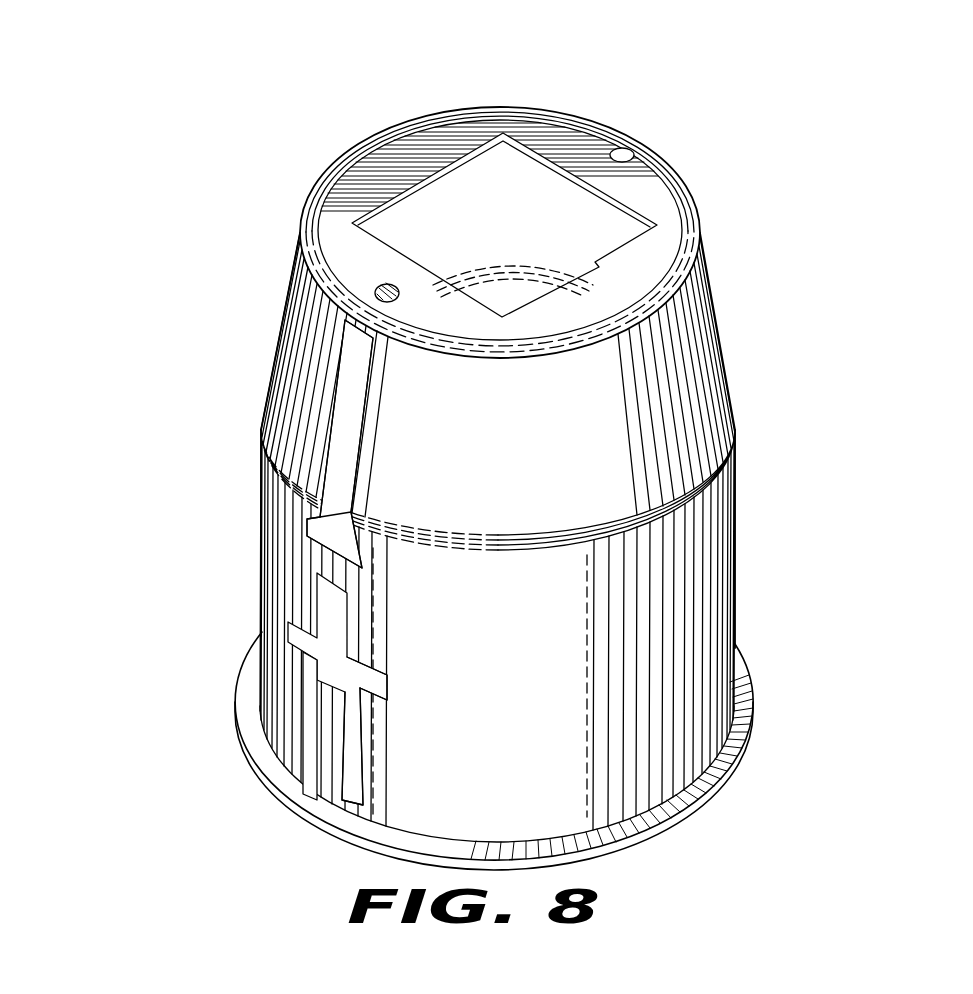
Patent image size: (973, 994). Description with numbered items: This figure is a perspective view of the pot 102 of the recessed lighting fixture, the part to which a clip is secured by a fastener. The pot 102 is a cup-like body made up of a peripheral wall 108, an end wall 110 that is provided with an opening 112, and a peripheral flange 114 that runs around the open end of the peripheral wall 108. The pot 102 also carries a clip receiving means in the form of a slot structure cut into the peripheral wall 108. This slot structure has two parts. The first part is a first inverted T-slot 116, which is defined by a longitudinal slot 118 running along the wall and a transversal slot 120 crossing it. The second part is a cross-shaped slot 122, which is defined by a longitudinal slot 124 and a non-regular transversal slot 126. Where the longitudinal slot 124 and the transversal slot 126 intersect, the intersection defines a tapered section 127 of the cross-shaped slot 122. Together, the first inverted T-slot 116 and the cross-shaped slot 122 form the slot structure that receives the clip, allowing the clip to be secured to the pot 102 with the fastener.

The pot 102 is at (725, 312).
The peripheral wall 108 is at (737, 558).
The end wall 110 is at (643, 193).
The opening 112 is at (560, 217).
The peripheral flange 114 is at (750, 720).
The first inverted T-slot 116 is at (360, 433).
The longitudinal slot 118 is at (350, 397).
The transversal slot 120 is at (353, 548).
The cross-shaped slot 122 is at (332, 727).
The longitudinal slot 124 is at (333, 633).
The non-regular transversal slot 126 is at (377, 683).
The tapered section 127 is at (327, 688).